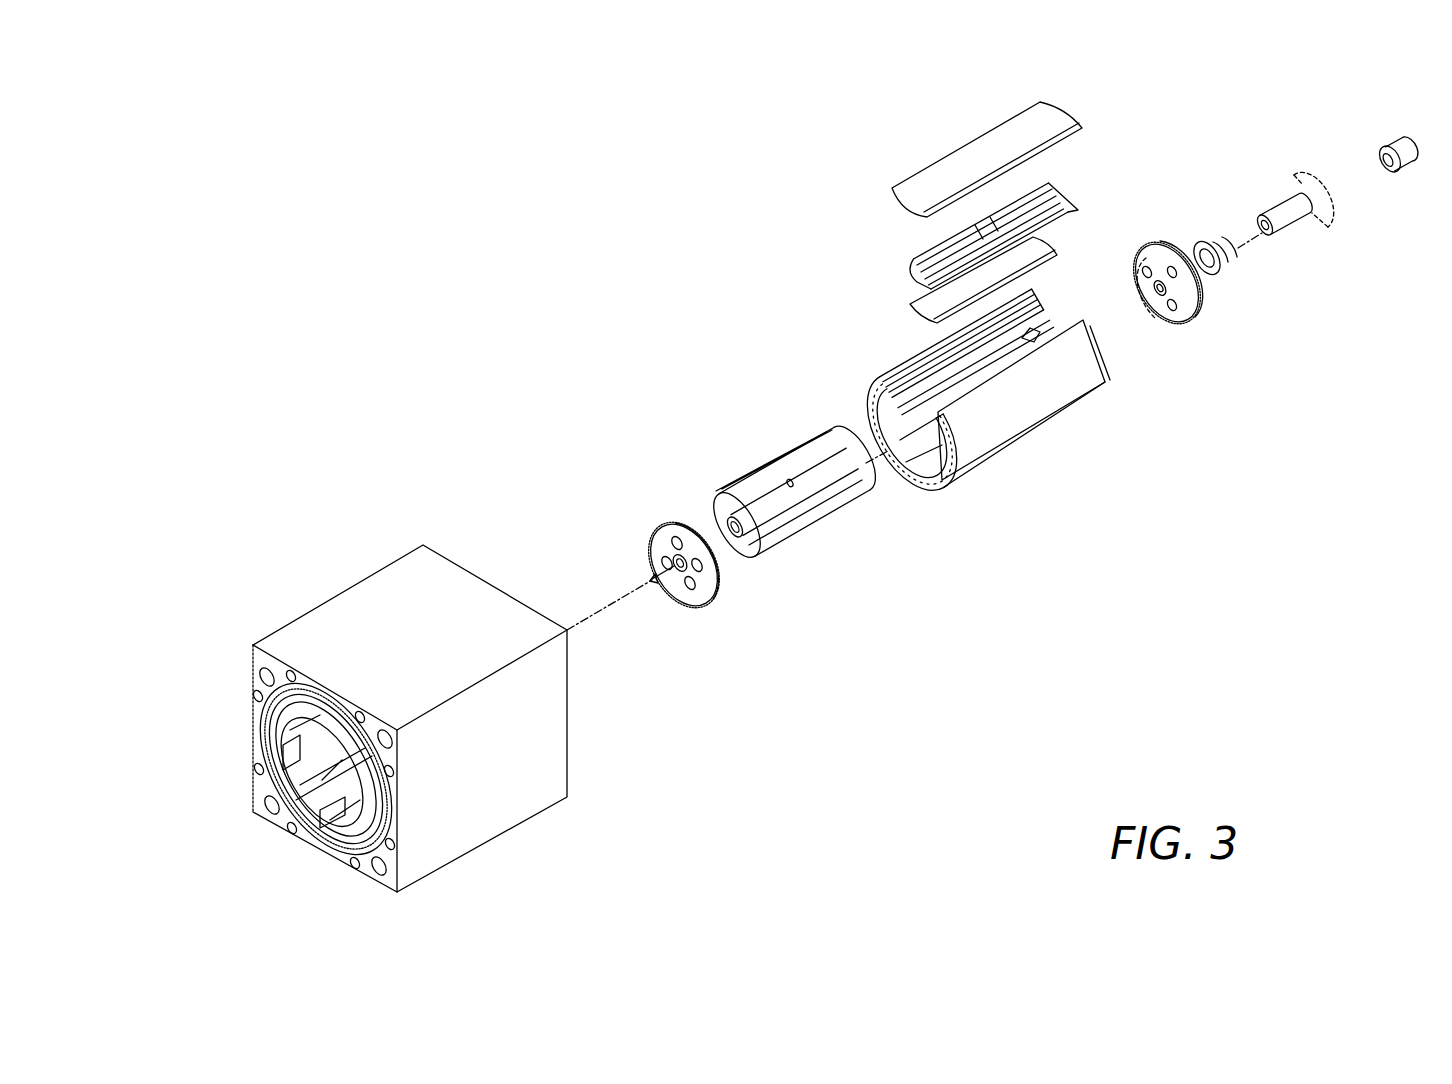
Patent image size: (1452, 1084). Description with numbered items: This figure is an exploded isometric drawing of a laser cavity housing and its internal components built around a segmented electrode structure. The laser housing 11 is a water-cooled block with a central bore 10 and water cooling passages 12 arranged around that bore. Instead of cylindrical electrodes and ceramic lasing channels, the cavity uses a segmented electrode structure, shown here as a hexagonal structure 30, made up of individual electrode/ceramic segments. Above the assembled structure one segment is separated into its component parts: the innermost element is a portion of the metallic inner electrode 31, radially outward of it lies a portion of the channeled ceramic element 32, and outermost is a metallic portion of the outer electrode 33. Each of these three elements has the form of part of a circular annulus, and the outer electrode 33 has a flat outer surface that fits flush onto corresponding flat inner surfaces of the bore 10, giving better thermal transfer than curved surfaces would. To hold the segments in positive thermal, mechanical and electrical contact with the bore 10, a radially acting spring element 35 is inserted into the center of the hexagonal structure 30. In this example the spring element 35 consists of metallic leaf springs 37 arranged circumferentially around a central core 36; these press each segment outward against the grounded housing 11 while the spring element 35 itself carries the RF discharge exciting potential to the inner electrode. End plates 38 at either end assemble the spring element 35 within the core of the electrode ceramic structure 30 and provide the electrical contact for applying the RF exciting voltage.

The central bore 10 is at (322, 747).
The laser housing 11 is at (313, 609).
The water cooling passages 12 is at (256, 677).
The hexagonal structure 30 is at (1060, 442).
The inner electrode portion 31 is at (912, 310).
The channeled ceramic element portion 32 is at (1075, 205).
The outer electrode portion 33 is at (892, 192).
The spring element 35 is at (838, 528).
The central core 36 is at (733, 527).
The metallic leaf springs 37 is at (792, 540).
The end plates 38 is at (713, 597).